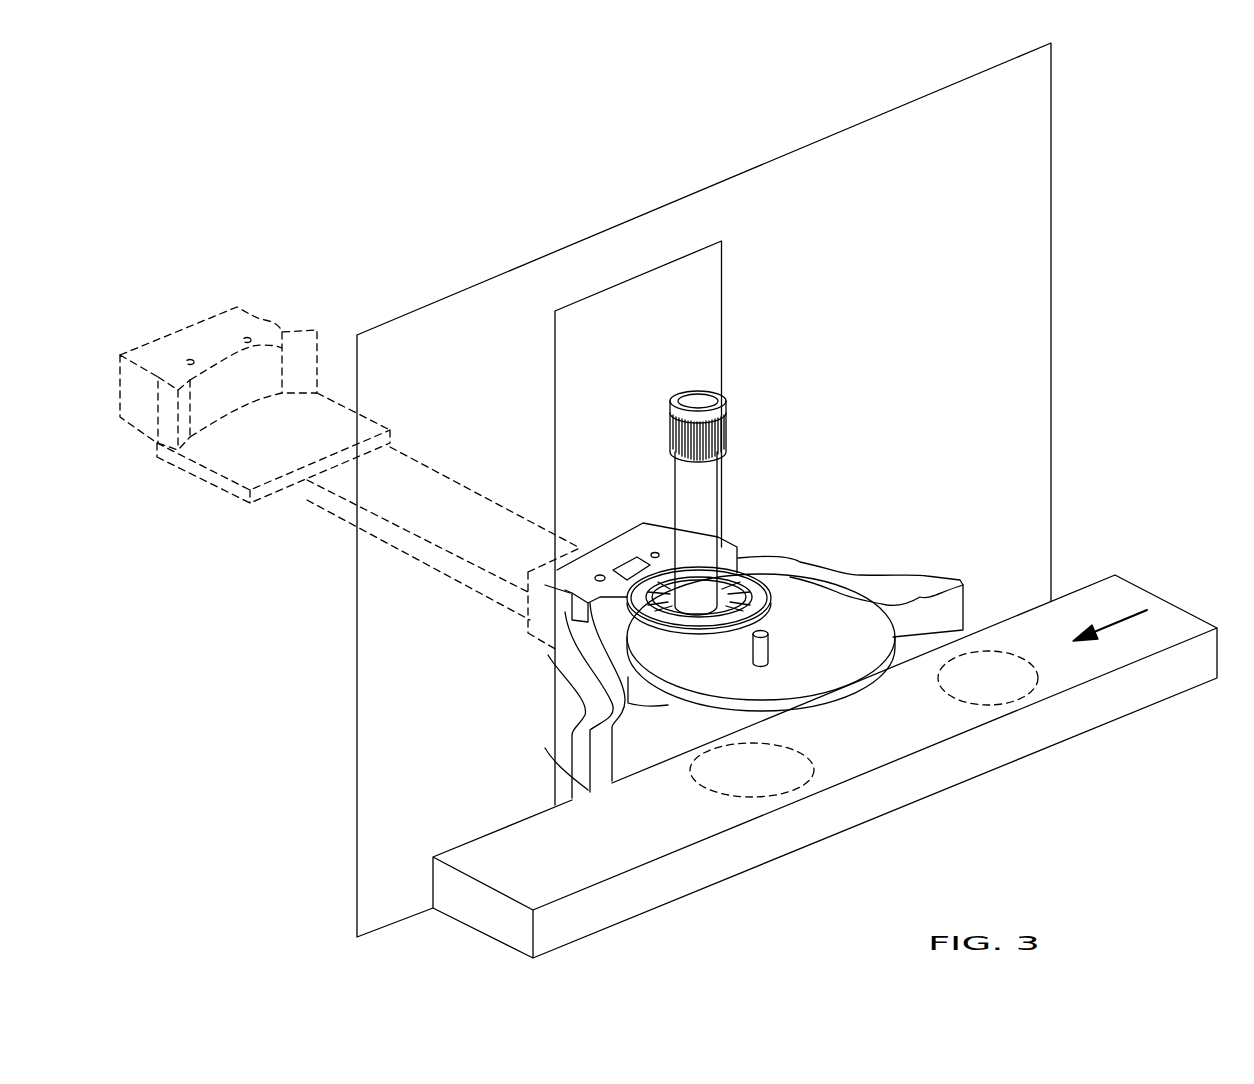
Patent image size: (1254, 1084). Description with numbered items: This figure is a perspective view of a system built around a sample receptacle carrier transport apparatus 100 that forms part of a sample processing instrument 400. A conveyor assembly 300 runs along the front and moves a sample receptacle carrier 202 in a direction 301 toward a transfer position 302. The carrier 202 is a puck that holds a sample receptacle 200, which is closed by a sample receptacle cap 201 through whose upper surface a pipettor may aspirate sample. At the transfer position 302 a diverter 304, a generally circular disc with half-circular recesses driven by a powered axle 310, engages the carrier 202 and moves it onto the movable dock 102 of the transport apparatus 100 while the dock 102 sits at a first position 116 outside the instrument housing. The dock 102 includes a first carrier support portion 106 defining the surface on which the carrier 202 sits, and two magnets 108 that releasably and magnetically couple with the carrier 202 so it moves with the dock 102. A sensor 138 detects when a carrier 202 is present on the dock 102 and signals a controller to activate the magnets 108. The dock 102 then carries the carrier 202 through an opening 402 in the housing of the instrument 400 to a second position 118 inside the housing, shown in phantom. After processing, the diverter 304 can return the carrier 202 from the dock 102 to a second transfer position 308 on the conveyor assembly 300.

The sample receptacle carrier transport apparatus 100 is at (320, 527).
The movable dock 102 is at (567, 575).
The first carrier support portion 106 is at (623, 670).
The magnets 108 is at (655, 552).
The first position 116 is at (777, 536).
The second position 118 is at (277, 298).
The sensor 138 is at (635, 562).
The sample receptacle 200 is at (710, 487).
The sample receptacle cap 201 is at (727, 425).
The sample receptacle carrier 202 is at (565, 597).
The conveyor assembly 300 is at (436, 885).
The direction 301 is at (1120, 625).
The transfer position 302 is at (1023, 697).
The diverter 304 is at (808, 583).
The second transfer position 308 is at (795, 797).
The powered axle 310 is at (770, 647).
The sample processing instrument 400 is at (932, 312).
The opening 402 is at (584, 420).